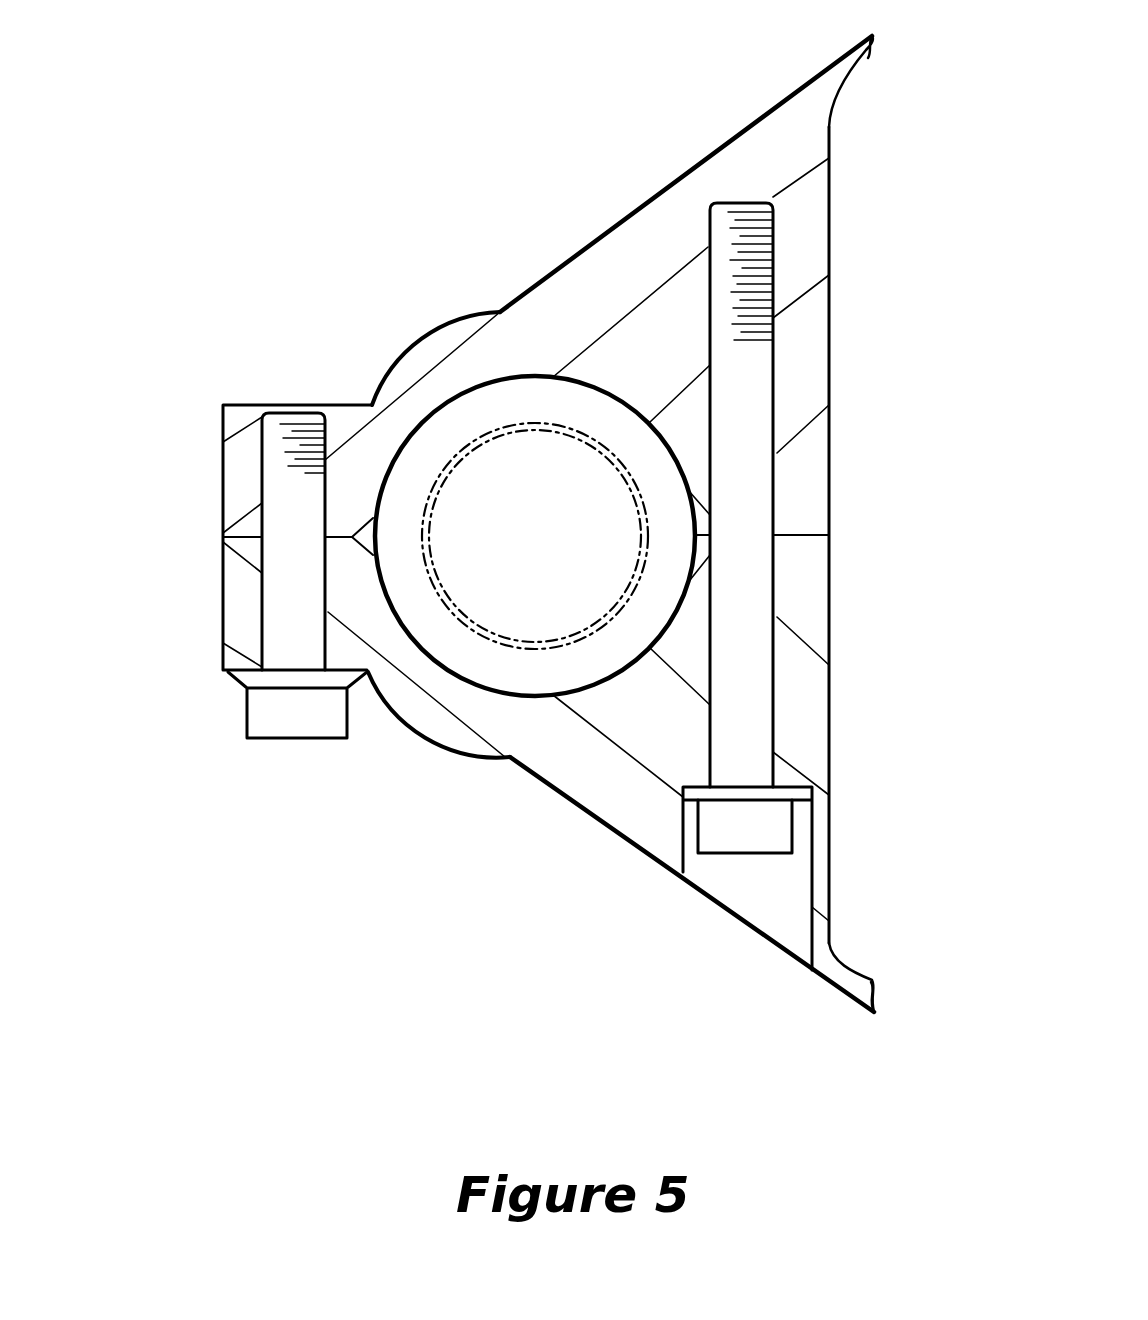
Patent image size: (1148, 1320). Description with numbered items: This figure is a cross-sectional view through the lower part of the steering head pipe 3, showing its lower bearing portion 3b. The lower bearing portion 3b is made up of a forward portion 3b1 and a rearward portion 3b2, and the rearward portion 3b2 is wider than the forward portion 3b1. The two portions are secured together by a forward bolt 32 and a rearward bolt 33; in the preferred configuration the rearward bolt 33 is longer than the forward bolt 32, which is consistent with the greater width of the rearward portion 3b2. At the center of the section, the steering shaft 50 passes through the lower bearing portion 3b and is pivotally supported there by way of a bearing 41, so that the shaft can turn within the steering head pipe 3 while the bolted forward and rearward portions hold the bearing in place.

The steering head pipe 3 is at (428, 320).
The lower bearing portion 3b is at (577, 288).
The forward portion 3b1 is at (240, 458).
The rearward portion 3b2 is at (755, 150).
The bearing 41 is at (663, 480).
The steering shaft 50 is at (613, 590).
The forward bolt 32 is at (265, 718).
The rearward bolt 33 is at (768, 828).